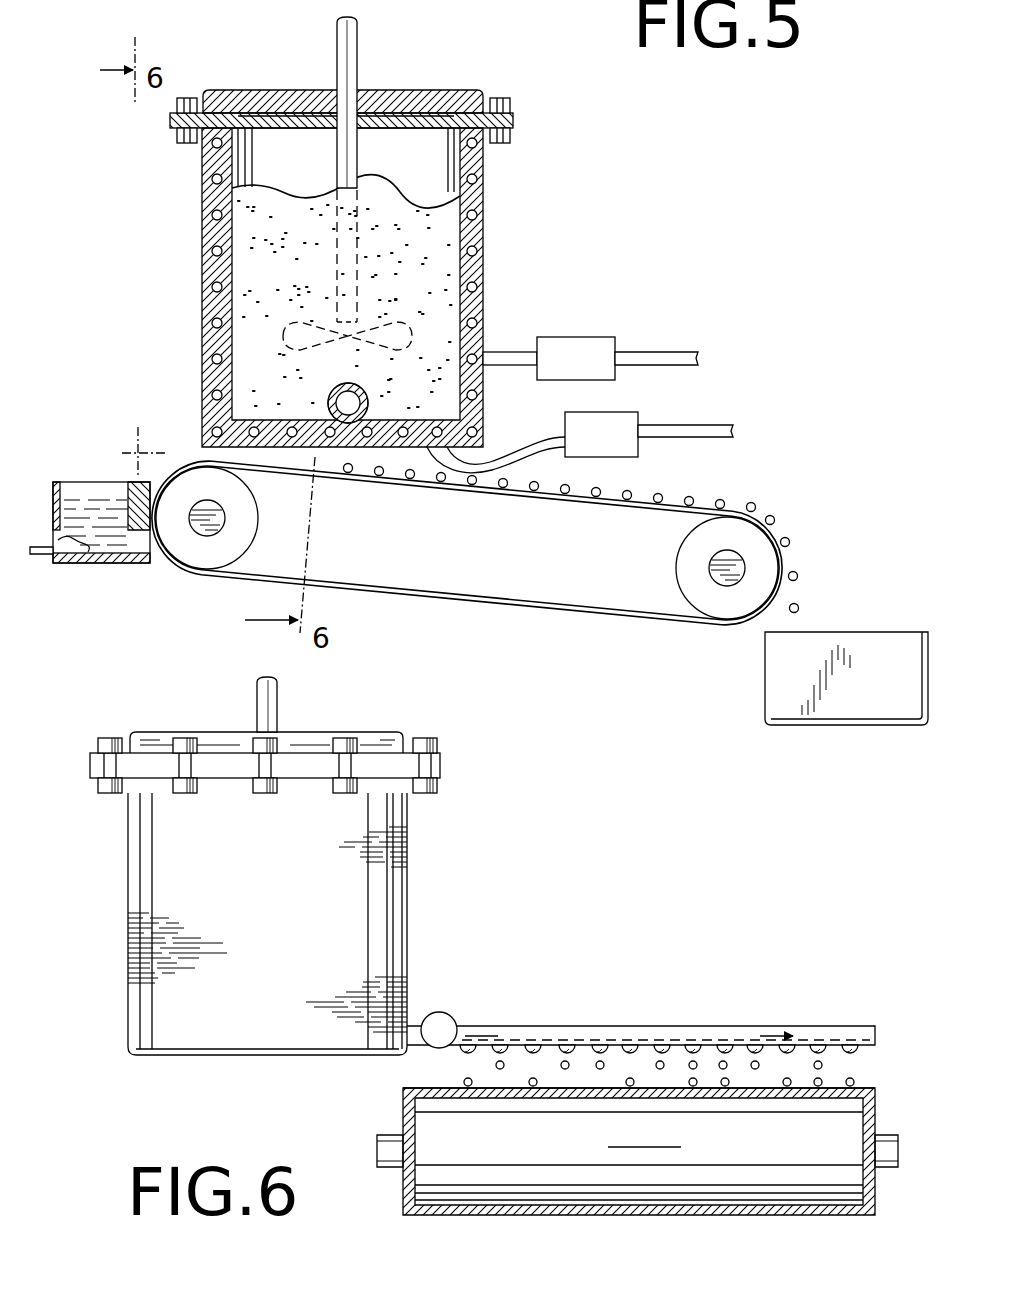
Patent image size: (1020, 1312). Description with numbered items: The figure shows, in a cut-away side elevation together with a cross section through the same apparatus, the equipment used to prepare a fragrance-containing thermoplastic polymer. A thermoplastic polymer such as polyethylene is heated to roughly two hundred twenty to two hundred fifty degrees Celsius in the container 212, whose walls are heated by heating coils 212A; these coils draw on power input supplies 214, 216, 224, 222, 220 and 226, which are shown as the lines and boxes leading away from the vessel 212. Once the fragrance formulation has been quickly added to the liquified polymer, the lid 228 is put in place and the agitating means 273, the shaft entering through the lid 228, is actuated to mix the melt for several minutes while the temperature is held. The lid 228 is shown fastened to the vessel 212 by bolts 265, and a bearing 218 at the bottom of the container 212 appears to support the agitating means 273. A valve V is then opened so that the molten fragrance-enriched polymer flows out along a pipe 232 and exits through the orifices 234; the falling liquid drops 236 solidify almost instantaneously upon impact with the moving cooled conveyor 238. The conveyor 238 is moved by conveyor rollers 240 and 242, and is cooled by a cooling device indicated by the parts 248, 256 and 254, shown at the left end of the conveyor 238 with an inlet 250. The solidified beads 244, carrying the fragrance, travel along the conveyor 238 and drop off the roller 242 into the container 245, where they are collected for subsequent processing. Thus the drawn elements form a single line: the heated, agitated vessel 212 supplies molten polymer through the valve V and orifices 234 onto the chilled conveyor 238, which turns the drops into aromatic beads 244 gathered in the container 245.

In FIG. 5, the container 212 is at (198, 313).
In FIG. 6, the container 212 is at (123, 960).
In FIG. 5, the heating coils 212A is at (478, 251).
In FIG. 5, the power input supply 214 is at (507, 351).
In FIG. 5, the power input supply 216 is at (573, 345).
In FIG. 5, the stirrer bearing 218 is at (362, 401).
In FIG. 5, the power input supply 220 is at (631, 446).
In FIG. 5, the power input supply 222 is at (503, 457).
In FIG. 5, the power input supply 224 is at (653, 356).
In FIG. 5, the power input supply 226 is at (686, 427).
In FIG. 5, the lid 228 is at (404, 92).
In FIG. 6, the lid 228 is at (208, 741).
In FIG. 6, the distribution pipe 232 is at (675, 1031).
In FIG. 6, the orifices 234 is at (530, 1044).
In FIG. 6, the falling droplets 236 is at (566, 1064).
In FIG. 5, the conveyor 238 is at (418, 490).
In FIG. 6, the conveyor 238 is at (404, 1089).
In FIG. 5, the conveyor roller 240 is at (245, 525).
In FIG. 5, the conveyor roller 242 is at (690, 572).
In FIG. 6, the conveyor roller 242 is at (637, 1151).
In FIG. 5, the solidified beads 244 is at (788, 544).
In FIG. 5, the container 245 is at (796, 726).
In FIG. 5, the cooling device 248 is at (55, 488).
In FIG. 5, the coolant inlet 250 is at (58, 566).
In FIG. 5, the cooling device 254 is at (112, 560).
In FIG. 5, the cooling device 256 is at (135, 488).
In FIG. 5, the bolts 265 is at (502, 98).
In FIG. 6, the bolts 265 is at (105, 740).
In FIG. 5, the agitating means 273 is at (336, 31).
In FIG. 6, the agitating means 273 is at (272, 711).